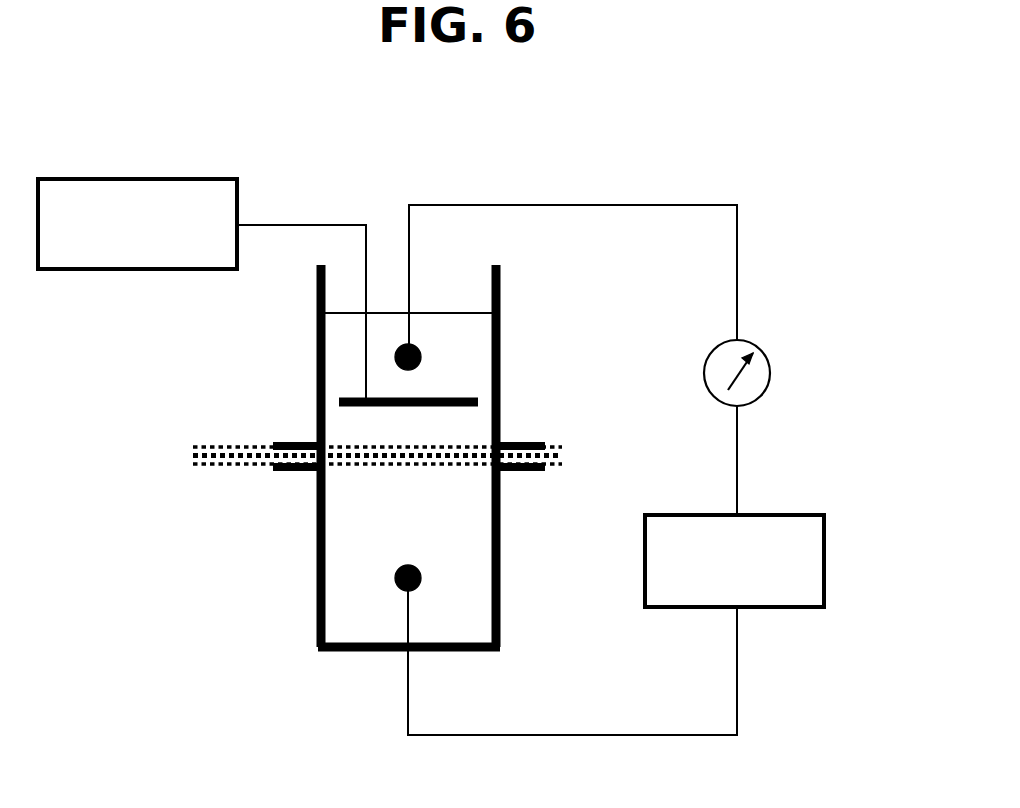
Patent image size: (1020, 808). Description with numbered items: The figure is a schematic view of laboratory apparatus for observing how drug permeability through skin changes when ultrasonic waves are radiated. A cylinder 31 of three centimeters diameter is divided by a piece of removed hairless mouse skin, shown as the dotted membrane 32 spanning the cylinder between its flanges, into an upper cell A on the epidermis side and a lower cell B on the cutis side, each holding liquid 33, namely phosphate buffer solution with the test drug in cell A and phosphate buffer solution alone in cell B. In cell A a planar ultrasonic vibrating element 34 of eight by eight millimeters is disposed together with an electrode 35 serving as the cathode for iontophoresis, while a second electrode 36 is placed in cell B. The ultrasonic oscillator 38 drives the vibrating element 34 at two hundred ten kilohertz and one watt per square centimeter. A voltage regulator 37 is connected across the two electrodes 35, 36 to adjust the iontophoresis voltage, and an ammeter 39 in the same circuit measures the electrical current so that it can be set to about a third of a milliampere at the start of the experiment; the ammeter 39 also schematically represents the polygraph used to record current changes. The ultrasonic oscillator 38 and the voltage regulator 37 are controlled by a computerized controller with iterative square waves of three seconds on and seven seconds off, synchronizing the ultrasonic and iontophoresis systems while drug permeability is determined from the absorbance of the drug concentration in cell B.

The cylinder 31 is at (317, 585).
The membrane 32 is at (238, 465).
The electrolyte solution 33 is at (477, 337).
The planar ultrasonic vibrating element 34 is at (462, 397).
The electrode 35 is at (413, 345).
The electrode 36 is at (402, 592).
The voltage regulator 37 is at (783, 515).
The ultrasonic oscillator 38 is at (150, 177).
The ammeter 39 is at (772, 377).